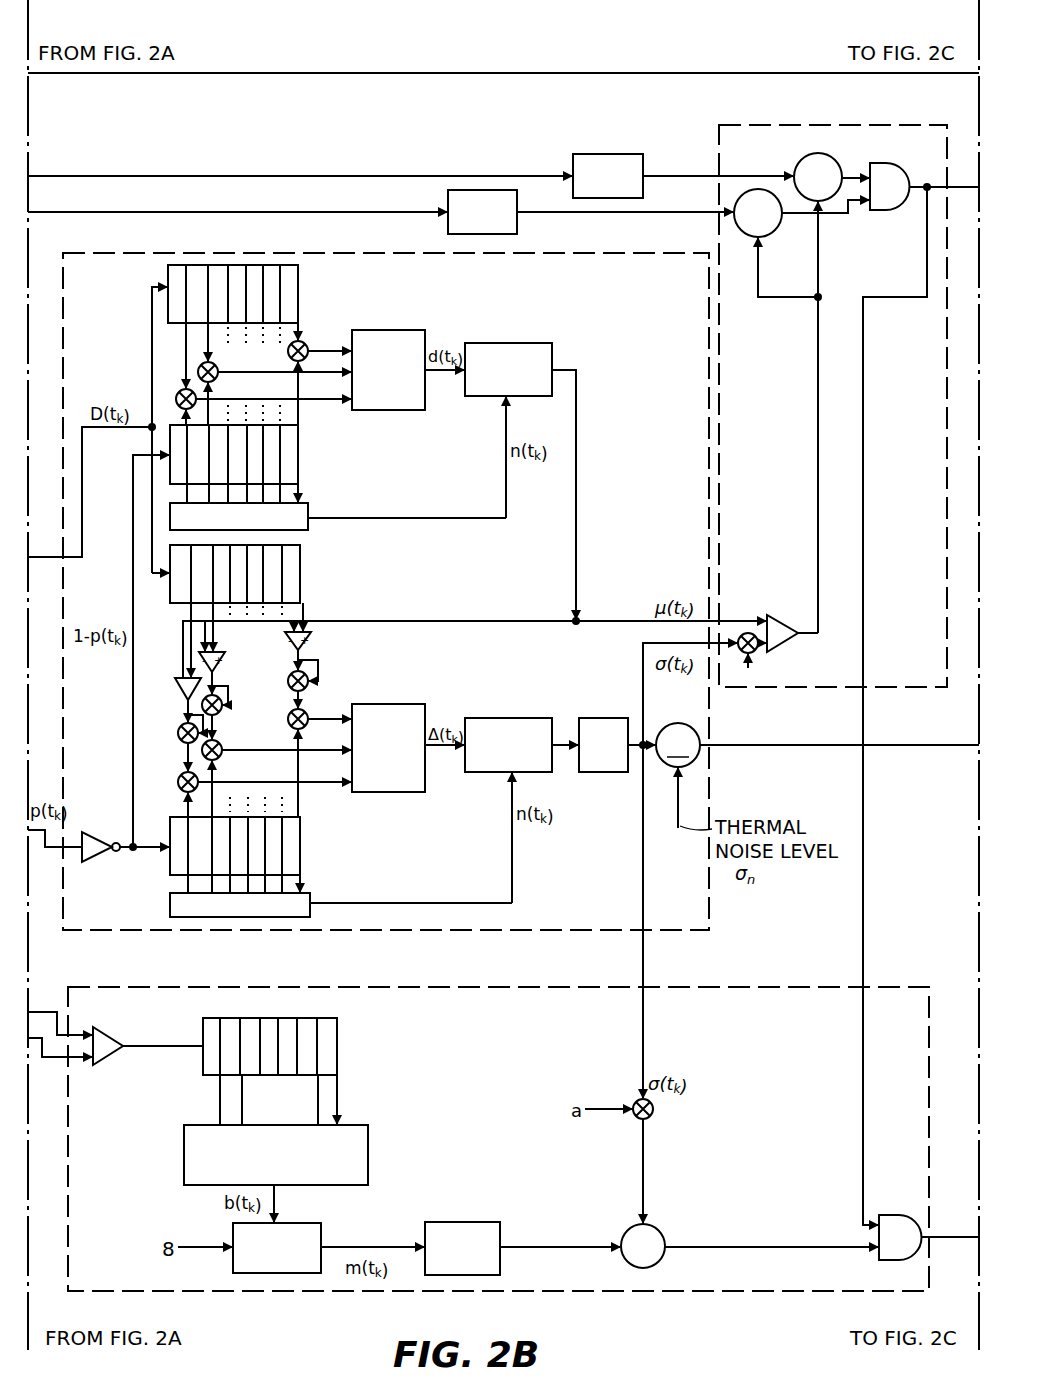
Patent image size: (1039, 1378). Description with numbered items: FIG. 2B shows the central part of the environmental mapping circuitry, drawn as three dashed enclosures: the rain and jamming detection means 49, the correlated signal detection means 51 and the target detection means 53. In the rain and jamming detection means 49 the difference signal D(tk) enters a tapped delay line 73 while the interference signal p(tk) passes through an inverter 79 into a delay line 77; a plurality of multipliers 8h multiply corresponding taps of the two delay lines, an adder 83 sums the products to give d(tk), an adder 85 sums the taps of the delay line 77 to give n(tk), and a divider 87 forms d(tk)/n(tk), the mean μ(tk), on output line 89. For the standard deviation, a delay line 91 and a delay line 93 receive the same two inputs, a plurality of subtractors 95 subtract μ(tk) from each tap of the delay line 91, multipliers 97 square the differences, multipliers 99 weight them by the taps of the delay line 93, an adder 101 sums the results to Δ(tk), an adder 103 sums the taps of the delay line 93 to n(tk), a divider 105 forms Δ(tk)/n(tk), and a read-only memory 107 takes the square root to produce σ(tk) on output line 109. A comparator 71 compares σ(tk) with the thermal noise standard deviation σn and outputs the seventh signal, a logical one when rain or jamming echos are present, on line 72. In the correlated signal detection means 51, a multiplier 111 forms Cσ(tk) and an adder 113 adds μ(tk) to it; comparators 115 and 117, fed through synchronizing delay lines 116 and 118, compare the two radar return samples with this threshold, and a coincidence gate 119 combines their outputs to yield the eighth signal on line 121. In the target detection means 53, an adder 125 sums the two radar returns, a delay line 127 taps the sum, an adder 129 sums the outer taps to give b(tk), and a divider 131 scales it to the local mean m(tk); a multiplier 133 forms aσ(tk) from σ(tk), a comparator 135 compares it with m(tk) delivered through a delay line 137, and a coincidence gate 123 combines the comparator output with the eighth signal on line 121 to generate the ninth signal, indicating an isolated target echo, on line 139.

The rain and jamming detection means 49 is at (386, 591).
The correlated signal detection means 51 is at (906, 130).
The target detection means 53 is at (498, 1139).
The comparator 71 is at (678, 745).
The output line 72 is at (782, 748).
The delay line 73 is at (298, 318).
The delay line 77 is at (298, 478).
The inverter 79 is at (88, 836).
The multipliers 8h is at (184, 389).
The adder 83 is at (430, 318).
The adder 85 is at (308, 513).
The divider 87 is at (540, 345).
The output line 89 is at (760, 614).
The delay line 91 is at (300, 597).
The delay line 93 is at (300, 869).
The subtractors 95 is at (180, 700).
The multipliers 97 is at (178, 737).
The multipliers 99 is at (182, 792).
The adder 101 is at (418, 795).
The adder 103 is at (320, 884).
The divider 105 is at (500, 773).
The read-only memory 107 is at (592, 772).
The output line 109 is at (738, 646).
The multiplier 111 is at (750, 655).
The adder 113 is at (796, 642).
The comparator 115 is at (781, 235).
The delay line 116 is at (626, 152).
The comparator 117 is at (808, 160).
The delay line 118 is at (528, 186).
The coincidence gate 119 is at (878, 168).
The output line 121 is at (916, 200).
The coincidence gate 123 is at (912, 1212).
The adder 125 is at (104, 1058).
The delay line 127 is at (337, 1070).
The adder 129 is at (368, 1155).
The divider 131 is at (321, 1226).
The multiplier 133 is at (645, 1120).
The comparator 135 is at (658, 1228).
The delay line 137 is at (506, 1210).
The output line 139 is at (970, 1234).